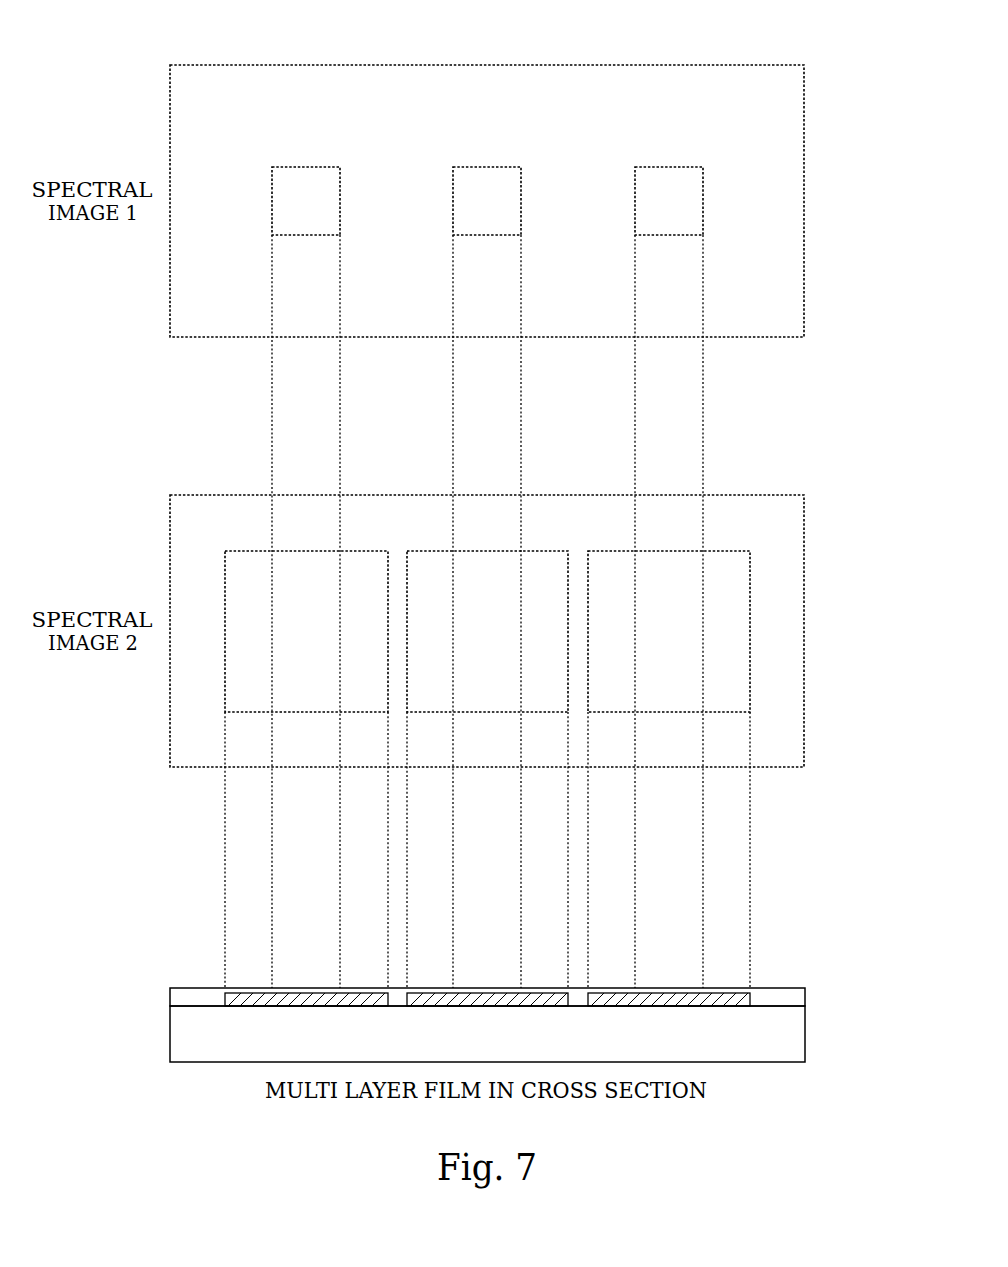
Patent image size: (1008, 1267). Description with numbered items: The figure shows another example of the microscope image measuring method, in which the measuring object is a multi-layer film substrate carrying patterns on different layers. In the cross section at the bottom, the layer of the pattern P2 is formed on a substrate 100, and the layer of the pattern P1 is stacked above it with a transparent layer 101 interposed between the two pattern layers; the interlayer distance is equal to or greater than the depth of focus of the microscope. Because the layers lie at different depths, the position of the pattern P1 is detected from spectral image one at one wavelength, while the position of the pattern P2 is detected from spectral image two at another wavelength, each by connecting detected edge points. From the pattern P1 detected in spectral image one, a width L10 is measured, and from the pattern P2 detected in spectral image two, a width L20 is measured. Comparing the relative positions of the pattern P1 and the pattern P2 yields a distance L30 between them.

The pattern P1 is at (321, 164).
The pattern P2 is at (362, 549).
The substrate 100 is at (805, 1040).
The transparent layer 101 is at (805, 990).
The width L10 is at (340, 813).
The width L20 is at (388, 879).
The distance L30 is at (272, 947).